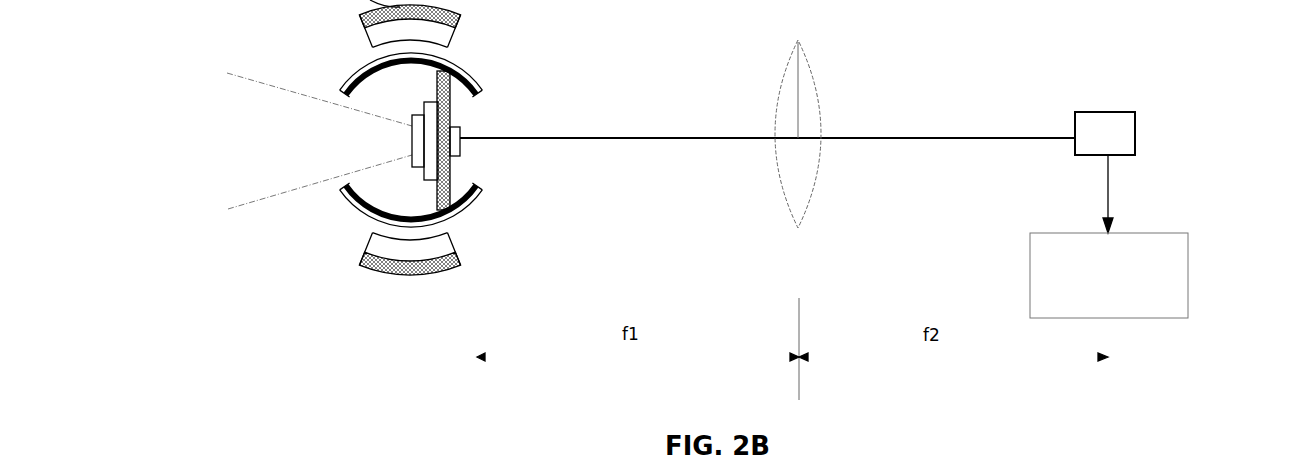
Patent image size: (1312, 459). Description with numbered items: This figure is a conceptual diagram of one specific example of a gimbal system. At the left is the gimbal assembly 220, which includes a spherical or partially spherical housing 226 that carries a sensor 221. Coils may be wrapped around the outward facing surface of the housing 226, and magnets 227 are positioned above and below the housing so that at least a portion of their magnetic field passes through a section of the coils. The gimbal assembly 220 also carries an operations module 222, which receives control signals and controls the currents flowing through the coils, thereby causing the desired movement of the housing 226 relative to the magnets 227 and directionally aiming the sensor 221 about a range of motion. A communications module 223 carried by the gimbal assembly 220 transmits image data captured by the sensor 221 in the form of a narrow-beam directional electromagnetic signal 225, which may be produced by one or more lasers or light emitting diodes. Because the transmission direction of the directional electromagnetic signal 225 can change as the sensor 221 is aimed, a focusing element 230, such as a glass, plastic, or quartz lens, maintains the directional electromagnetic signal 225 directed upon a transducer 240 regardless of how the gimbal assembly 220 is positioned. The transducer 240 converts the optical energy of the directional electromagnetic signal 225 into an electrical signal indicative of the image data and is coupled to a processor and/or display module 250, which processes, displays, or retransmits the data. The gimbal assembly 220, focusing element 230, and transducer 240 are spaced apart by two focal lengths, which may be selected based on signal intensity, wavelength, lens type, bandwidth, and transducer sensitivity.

The gimbal assembly 220 is at (426, 298).
The sensor 221 is at (412, 120).
The operations module 222 is at (443, 160).
The communications module 223 is at (462, 130).
The directional electromagnetic signal 225 is at (678, 138).
The housing 226 is at (356, 70).
The magnet 227 is at (360, 270).
The focusing element 230 is at (820, 90).
The transducer 240 is at (1136, 130).
The processor and/or display module 250 is at (1188, 260).